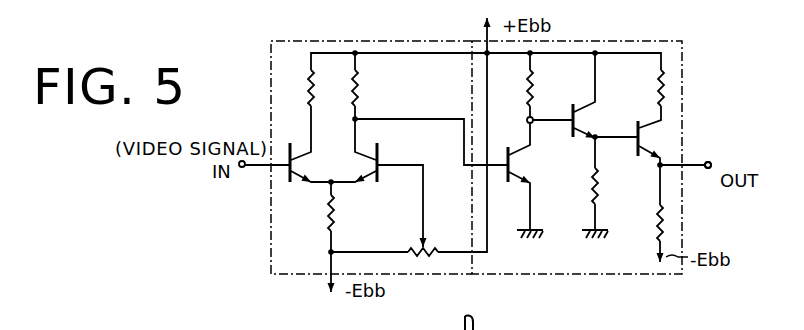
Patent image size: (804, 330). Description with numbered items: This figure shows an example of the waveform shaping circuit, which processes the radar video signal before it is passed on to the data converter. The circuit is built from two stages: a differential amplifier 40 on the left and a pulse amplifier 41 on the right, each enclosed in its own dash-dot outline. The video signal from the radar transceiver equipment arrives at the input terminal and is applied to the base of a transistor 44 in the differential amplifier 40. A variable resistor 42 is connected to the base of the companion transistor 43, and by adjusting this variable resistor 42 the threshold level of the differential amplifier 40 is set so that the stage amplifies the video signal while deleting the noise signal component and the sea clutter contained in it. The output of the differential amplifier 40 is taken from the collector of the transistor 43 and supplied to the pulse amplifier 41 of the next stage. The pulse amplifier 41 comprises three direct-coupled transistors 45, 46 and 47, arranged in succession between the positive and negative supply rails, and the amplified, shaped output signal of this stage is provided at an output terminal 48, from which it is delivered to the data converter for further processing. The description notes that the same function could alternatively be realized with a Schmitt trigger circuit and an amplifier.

The differential amplifier 40 is at (368, 46).
The pulse amplifier 41 is at (649, 46).
The variable resistor 42 is at (426, 249).
The transistor 43 is at (363, 149).
The transistor 44 is at (293, 163).
The transistor 45 is at (512, 165).
The transistor 46 is at (576, 120).
The transistor 47 is at (640, 138).
The output terminal 48 is at (711, 164).